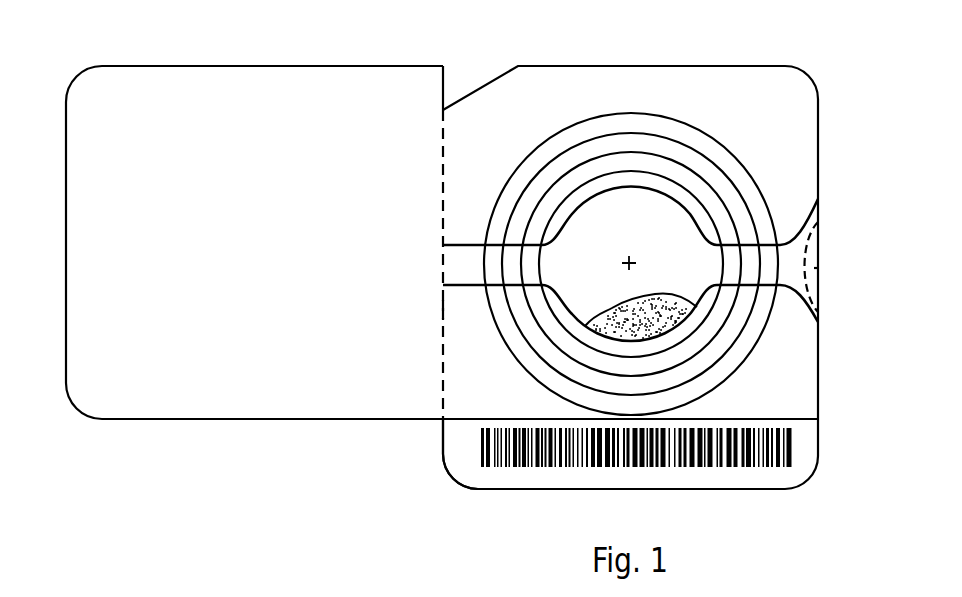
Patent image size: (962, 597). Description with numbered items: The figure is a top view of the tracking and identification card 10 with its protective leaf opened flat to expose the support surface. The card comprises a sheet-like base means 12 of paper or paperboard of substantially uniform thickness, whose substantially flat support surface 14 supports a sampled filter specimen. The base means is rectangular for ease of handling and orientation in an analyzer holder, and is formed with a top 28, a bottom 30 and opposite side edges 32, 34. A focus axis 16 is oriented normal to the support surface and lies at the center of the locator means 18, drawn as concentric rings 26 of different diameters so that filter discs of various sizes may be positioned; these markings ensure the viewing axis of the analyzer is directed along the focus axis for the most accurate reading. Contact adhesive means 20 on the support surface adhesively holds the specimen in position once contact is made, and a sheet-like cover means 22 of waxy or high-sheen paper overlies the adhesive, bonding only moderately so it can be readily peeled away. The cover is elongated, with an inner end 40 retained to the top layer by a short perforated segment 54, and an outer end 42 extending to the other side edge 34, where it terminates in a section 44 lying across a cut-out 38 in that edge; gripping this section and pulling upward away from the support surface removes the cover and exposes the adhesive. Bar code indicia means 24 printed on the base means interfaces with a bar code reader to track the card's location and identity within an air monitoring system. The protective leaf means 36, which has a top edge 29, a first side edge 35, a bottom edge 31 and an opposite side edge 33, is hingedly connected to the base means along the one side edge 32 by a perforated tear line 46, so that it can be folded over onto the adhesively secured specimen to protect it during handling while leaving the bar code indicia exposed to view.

The tracking and identification card 10 is at (642, 48).
The base means 12 is at (802, 400).
The support surface 14 is at (745, 333).
The focus axis 16 is at (633, 256).
The locator means 18 is at (608, 315).
The contact adhesive means 20 is at (660, 303).
The cover means 22 is at (603, 228).
The bar code indicia means 24 is at (524, 466).
The concentric rings 26 is at (612, 153).
The top 28 is at (692, 66).
The top edge 29 is at (197, 66).
The bottom 30 is at (741, 491).
The bottom edge 31 is at (247, 422).
The side edge 32 is at (453, 358).
The opposite side edge 33 is at (437, 153).
The other side edge 34 is at (805, 367).
The first side edge 35 is at (67, 278).
The leaf means 36 is at (113, 395).
The cut-out 38 is at (807, 268).
The inner end 40 is at (448, 277).
The outer end 42 is at (817, 203).
The section 44 is at (813, 250).
The perforated tear line 46 is at (440, 311).
The perforated segment 54 is at (442, 257).